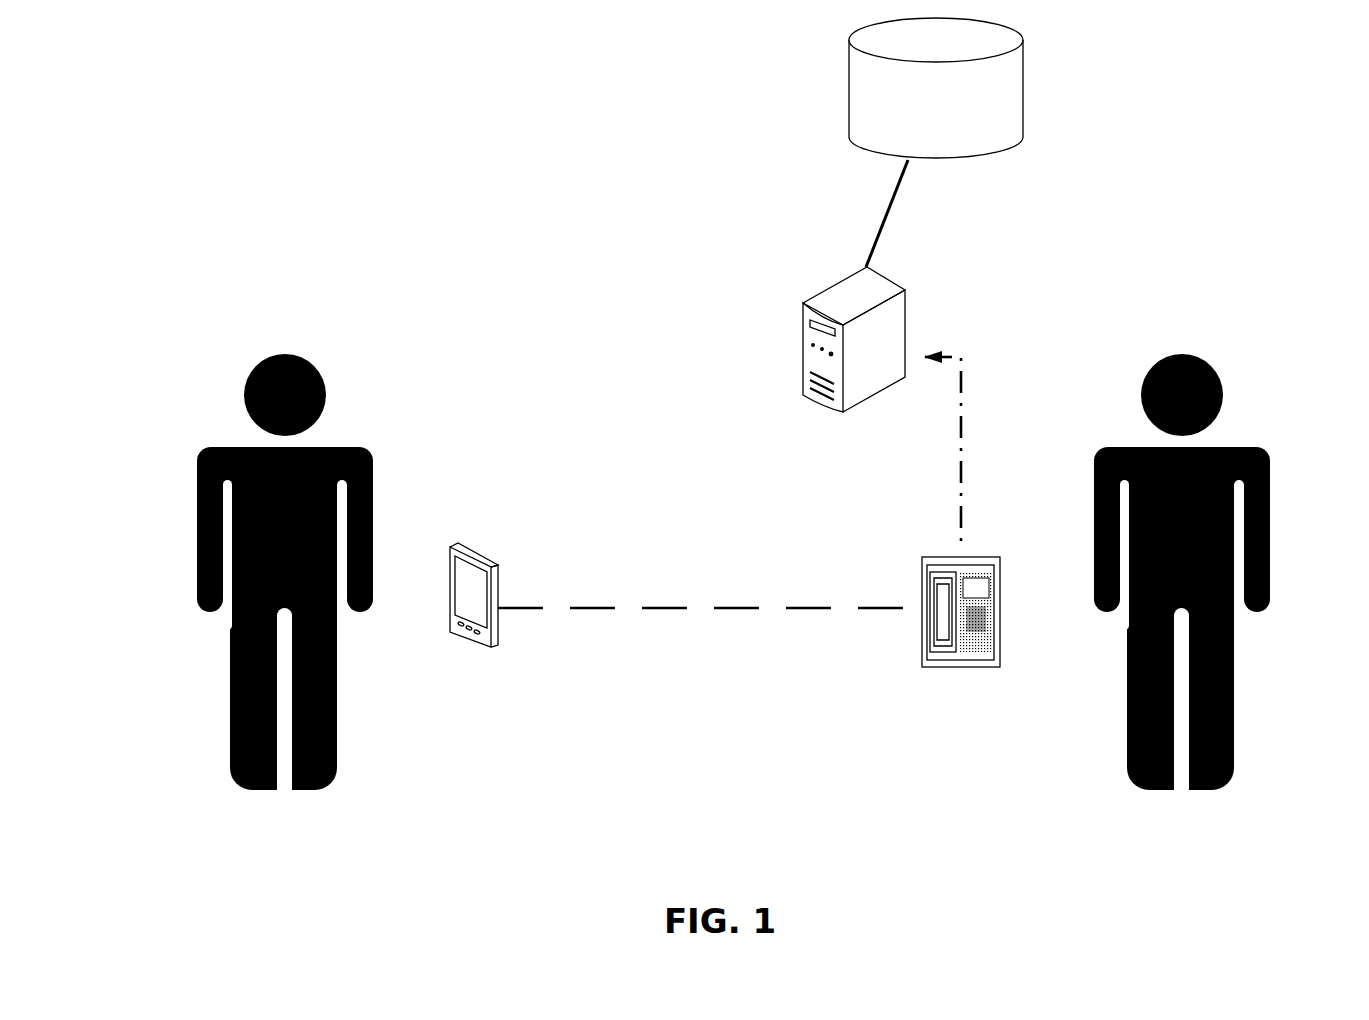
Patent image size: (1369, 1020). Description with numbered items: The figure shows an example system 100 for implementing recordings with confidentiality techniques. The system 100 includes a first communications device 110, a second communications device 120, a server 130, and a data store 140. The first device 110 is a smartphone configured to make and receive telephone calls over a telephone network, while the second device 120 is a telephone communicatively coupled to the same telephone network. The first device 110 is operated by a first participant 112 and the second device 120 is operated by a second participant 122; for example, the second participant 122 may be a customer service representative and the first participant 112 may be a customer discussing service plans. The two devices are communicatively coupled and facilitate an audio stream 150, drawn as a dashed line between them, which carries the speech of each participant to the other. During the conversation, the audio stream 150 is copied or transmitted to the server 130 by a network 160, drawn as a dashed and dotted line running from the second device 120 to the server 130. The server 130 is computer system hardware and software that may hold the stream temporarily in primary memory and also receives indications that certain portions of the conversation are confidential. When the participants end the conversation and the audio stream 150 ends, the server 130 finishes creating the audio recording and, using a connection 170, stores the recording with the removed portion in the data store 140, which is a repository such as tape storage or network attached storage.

The system 100 is at (527, 88).
The first communications device 110 is at (452, 661).
The first participant 112 is at (222, 789).
The second communications device 120 is at (998, 676).
The second participant 122 is at (1244, 793).
The server 130 is at (855, 358).
The data store 140 is at (916, 117).
The audio stream 150 is at (759, 648).
The network 160 is at (983, 397).
The connection 170 is at (908, 242).